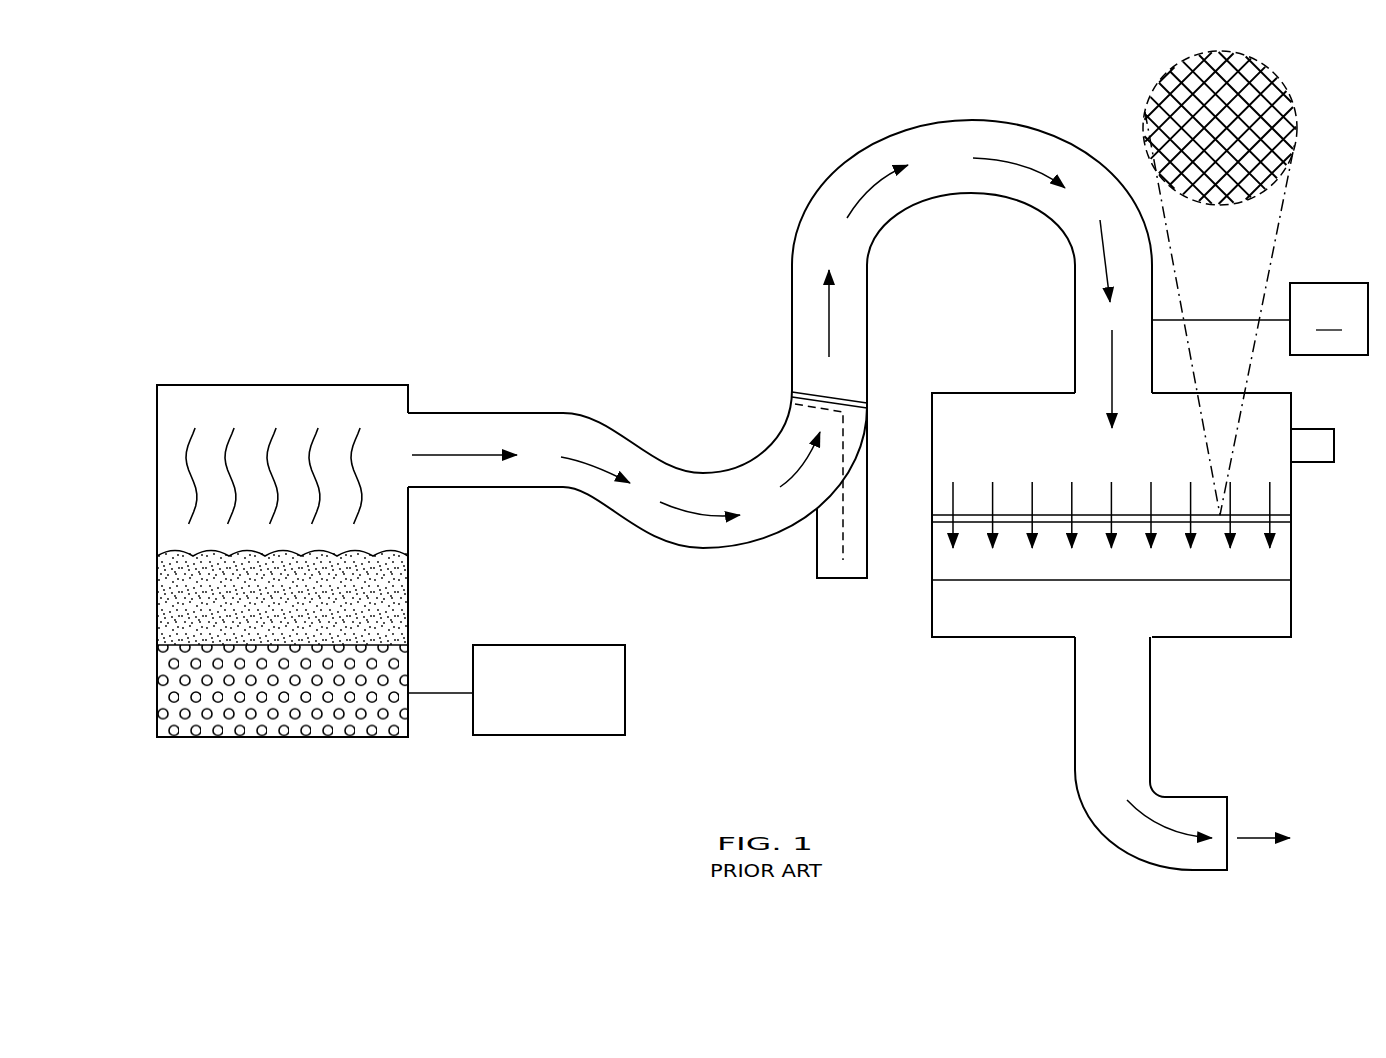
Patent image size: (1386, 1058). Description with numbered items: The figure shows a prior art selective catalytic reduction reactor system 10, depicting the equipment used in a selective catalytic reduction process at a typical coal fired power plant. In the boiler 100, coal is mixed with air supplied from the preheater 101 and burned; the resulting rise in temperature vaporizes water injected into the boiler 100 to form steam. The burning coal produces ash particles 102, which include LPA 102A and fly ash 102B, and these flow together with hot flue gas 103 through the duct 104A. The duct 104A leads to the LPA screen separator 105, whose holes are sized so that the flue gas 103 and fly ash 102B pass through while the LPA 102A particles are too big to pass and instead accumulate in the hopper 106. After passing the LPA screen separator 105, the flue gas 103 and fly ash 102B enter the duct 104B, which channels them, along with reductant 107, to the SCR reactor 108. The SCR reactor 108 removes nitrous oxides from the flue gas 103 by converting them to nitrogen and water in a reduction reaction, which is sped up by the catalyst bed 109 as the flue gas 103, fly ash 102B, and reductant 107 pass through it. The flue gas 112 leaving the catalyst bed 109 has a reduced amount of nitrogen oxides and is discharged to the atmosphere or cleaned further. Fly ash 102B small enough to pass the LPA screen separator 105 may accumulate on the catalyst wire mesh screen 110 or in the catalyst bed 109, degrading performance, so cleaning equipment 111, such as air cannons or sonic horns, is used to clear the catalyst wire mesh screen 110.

The selective catalytic reduction reactor system 10 is at (533, 188).
The boiler 100 is at (203, 385).
The preheater 101 is at (625, 692).
The ash particles 102 is at (572, 455).
The LPA 102A is at (843, 538).
The fly ash 102B is at (878, 182).
The flue gas 103 is at (826, 318).
The duct 104A is at (649, 447).
The duct 104B is at (808, 207).
The LPA screen separator 105 is at (808, 388).
The hopper 106 is at (855, 580).
The reductant 107 is at (1110, 377).
The selective catalytic reduction reactor 108 is at (955, 392).
The catalyst bed 109 is at (1278, 565).
The catalyst wire mesh screen 110 is at (1278, 520).
The cleaning equipment 111 is at (1310, 453).
The flue gas 112 is at (1255, 838).